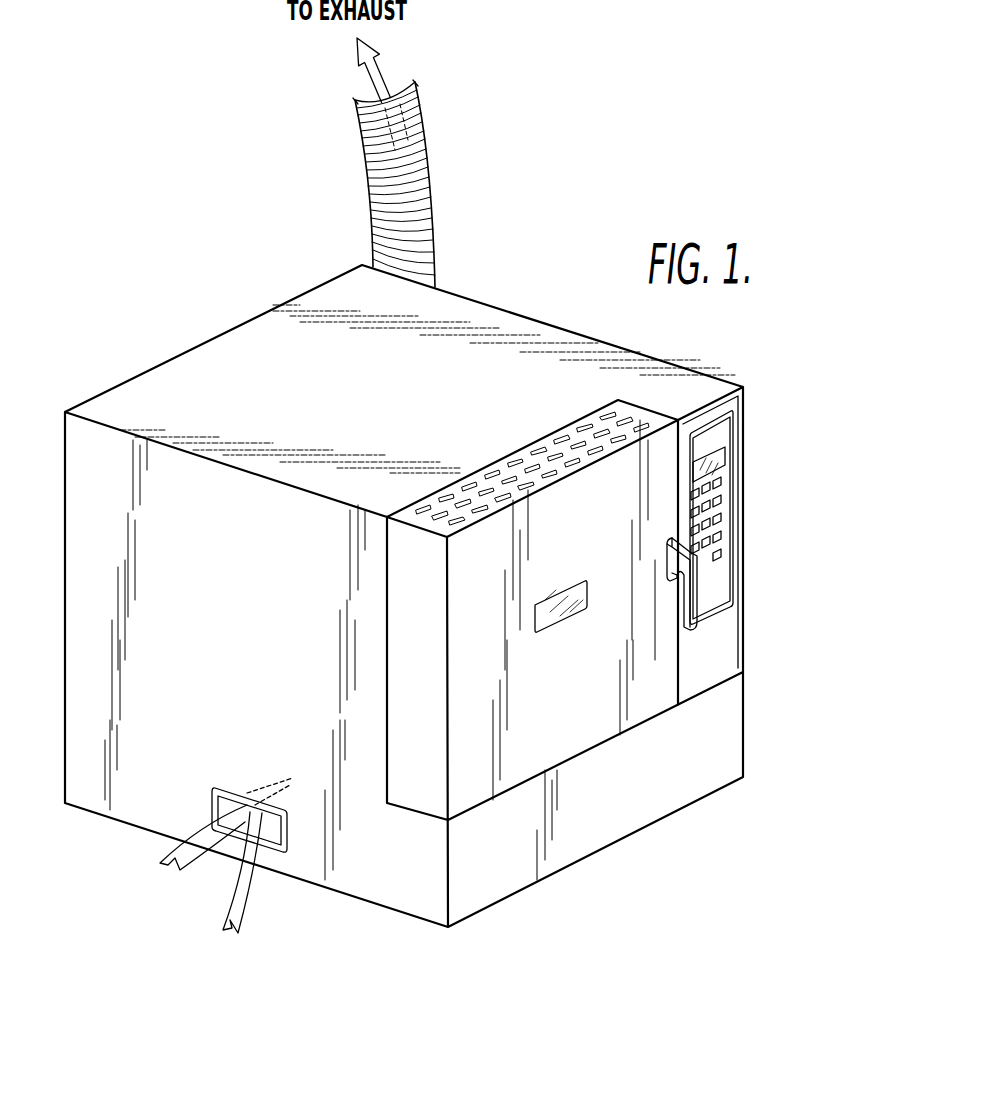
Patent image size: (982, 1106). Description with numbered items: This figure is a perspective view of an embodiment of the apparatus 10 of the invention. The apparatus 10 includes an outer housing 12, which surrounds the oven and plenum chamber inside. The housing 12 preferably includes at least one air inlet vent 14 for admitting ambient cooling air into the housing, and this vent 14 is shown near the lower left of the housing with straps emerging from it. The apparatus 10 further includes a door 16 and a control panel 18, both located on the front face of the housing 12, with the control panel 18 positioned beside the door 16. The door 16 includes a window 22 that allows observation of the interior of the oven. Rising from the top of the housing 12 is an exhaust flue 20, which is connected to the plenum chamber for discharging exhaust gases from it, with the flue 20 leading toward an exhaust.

The apparatus 10 is at (654, 165).
The outer housing 12 is at (170, 357).
The air inlet vent 14 is at (285, 852).
The door 16 is at (695, 398).
The control panel 18 is at (723, 573).
The exhaust flue 20 is at (432, 170).
The window 22 is at (575, 615).